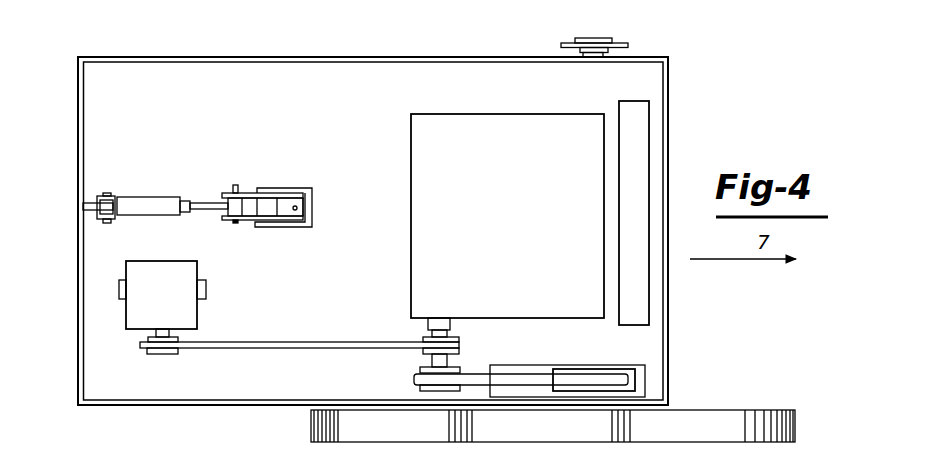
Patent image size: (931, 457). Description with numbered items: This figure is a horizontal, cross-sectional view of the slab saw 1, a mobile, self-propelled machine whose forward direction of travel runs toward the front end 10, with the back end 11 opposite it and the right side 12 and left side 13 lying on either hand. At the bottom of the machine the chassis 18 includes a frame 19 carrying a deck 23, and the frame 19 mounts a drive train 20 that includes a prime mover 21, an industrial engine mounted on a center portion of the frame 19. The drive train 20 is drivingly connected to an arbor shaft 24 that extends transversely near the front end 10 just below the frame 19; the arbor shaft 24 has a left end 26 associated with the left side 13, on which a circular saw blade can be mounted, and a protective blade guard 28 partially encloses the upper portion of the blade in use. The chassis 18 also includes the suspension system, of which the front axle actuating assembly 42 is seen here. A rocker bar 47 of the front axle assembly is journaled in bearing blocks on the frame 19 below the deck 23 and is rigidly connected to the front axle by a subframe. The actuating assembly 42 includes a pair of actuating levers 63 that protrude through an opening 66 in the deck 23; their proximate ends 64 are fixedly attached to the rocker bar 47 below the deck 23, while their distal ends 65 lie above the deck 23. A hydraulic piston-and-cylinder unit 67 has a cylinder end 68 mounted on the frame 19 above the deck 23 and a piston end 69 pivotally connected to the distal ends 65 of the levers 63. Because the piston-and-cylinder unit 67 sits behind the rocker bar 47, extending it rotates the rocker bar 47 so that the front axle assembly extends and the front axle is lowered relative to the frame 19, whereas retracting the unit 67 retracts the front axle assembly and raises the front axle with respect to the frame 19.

The slab saw 1 is at (722, 47).
The front end 10 is at (671, 112).
The back end 11 is at (82, 137).
The right side 12 is at (243, 407).
The left side 13 is at (270, 57).
The chassis 18 is at (78, 57).
The frame 19 is at (77, 407).
The drive train 20 is at (383, 322).
The prime mover 21 is at (412, 114).
The deck 23 is at (305, 113).
The arbor shaft 24 is at (607, 38).
The left end of arbor shaft 26 is at (580, 43).
The blade guard 28 is at (790, 411).
The front axle actuating assembly 42 is at (266, 205).
The rocker bar 47 is at (300, 208).
The actuating levers 63 is at (245, 220).
The proximate ends 64 is at (298, 225).
The distal ends 65 is at (230, 220).
The opening 66 is at (305, 198).
The hydraulic piston-and-cylinder unit 67 is at (152, 216).
The cylinder end 68 is at (100, 195).
The piston end 69 is at (246, 212).